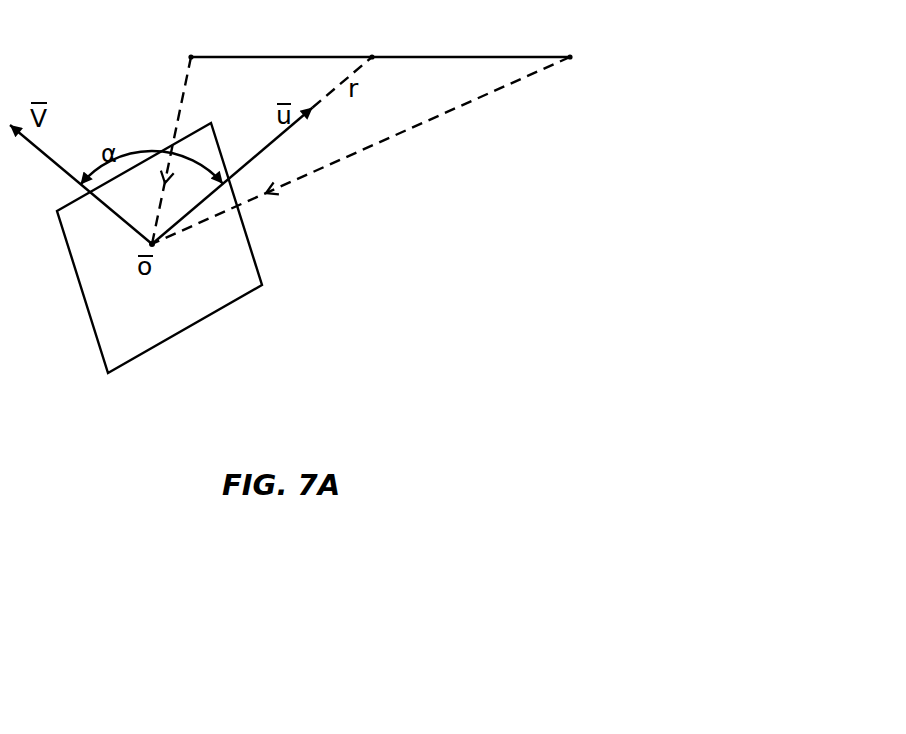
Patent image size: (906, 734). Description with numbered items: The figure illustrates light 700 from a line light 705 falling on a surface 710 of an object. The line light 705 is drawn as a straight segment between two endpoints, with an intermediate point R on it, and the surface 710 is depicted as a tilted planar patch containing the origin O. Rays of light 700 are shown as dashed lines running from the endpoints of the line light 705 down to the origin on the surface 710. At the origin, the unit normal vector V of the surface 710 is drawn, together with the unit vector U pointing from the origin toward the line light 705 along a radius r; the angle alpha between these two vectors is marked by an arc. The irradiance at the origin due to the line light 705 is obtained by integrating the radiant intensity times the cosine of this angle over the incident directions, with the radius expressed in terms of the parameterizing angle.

The light 700 is at (177, 115).
The line light 705 is at (423, 57).
The surface 710 is at (100, 340).